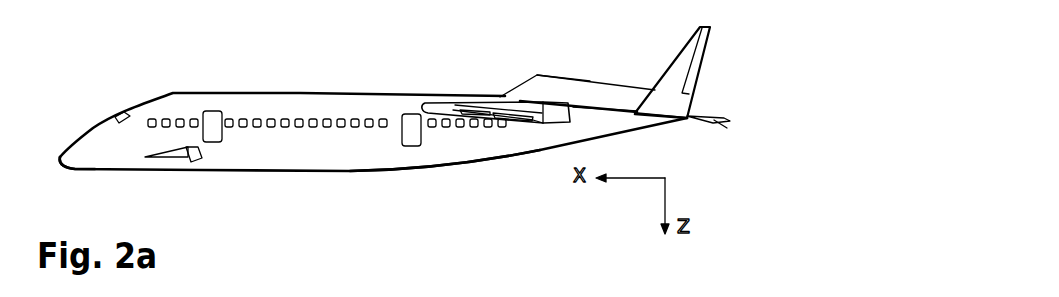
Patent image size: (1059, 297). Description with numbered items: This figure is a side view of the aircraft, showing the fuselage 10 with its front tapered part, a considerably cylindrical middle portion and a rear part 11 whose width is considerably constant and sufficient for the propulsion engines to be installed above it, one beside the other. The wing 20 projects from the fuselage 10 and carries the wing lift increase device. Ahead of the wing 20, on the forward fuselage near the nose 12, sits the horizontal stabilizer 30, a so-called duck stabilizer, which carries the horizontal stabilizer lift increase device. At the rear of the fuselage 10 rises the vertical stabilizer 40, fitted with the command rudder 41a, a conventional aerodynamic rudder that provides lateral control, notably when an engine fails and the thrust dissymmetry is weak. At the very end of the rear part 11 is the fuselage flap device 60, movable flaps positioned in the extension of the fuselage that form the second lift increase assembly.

The fuselage 10 is at (300, 153).
The rear part of the fuselage 11 is at (460, 172).
The nose 12 is at (93, 168).
The wing 20 is at (453, 104).
The horizontal stabilizer 30 is at (175, 158).
The vertical stabilizer 40 is at (674, 58).
The command rudder 41a is at (700, 62).
The fuselage flap device 60 is at (703, 131).